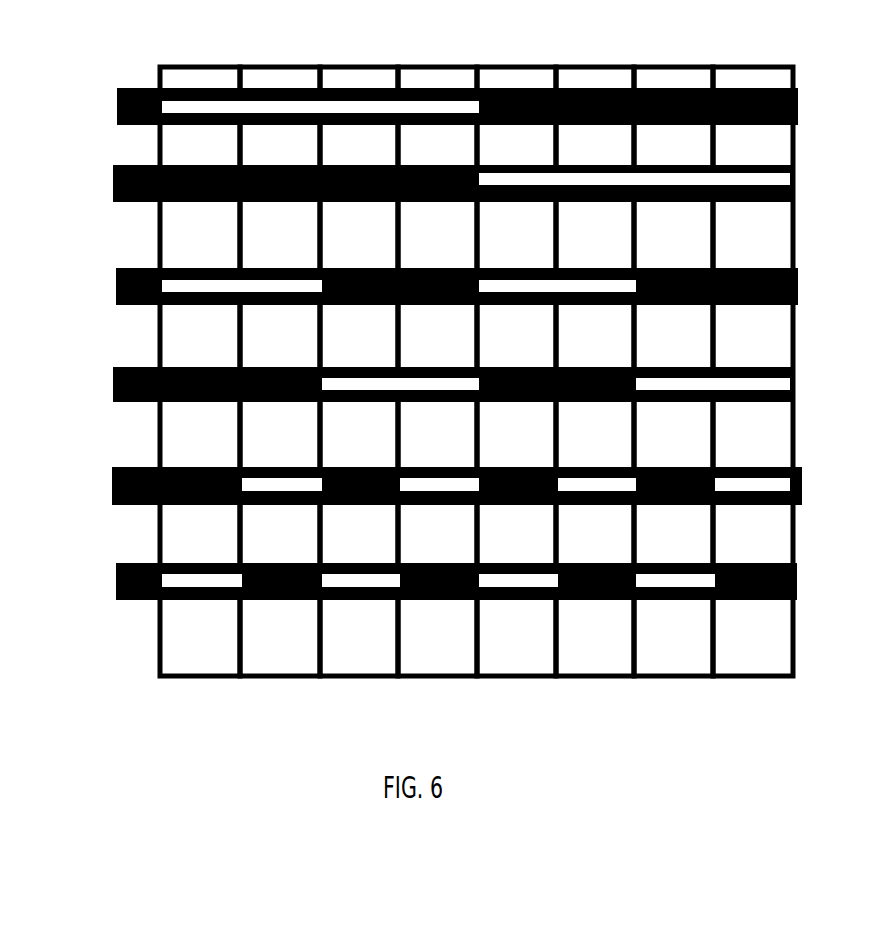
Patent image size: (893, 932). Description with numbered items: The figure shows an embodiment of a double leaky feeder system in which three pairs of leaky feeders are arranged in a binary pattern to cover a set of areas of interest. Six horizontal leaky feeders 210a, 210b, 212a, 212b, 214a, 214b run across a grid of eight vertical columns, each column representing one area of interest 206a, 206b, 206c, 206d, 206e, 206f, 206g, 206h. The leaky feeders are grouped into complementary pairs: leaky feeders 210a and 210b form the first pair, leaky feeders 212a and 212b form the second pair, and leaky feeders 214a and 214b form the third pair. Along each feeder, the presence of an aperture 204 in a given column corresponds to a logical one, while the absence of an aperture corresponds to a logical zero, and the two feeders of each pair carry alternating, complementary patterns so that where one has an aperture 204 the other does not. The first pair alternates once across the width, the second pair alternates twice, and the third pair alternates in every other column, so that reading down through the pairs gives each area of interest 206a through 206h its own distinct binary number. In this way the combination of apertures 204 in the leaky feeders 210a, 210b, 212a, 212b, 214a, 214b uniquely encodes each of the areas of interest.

The aperture 204 is at (200, 107).
The area of interest 206a is at (183, 657).
The area of interest 206b is at (263, 657).
The area of interest 206c is at (342, 657).
The area of interest 206d is at (420, 661).
The area of interest 206e is at (534, 657).
The area of interest 206f is at (578, 657).
The area of interest 206g is at (656, 661).
The area of interest 206h is at (736, 657).
The leaky feeder 210a is at (117, 106).
The leaky feeder 210b is at (113, 180).
The leaky feeder 212a is at (116, 290).
The leaky feeder 212b is at (113, 388).
The leaky feeder 214a is at (112, 483).
The leaky feeder 214b is at (116, 575).